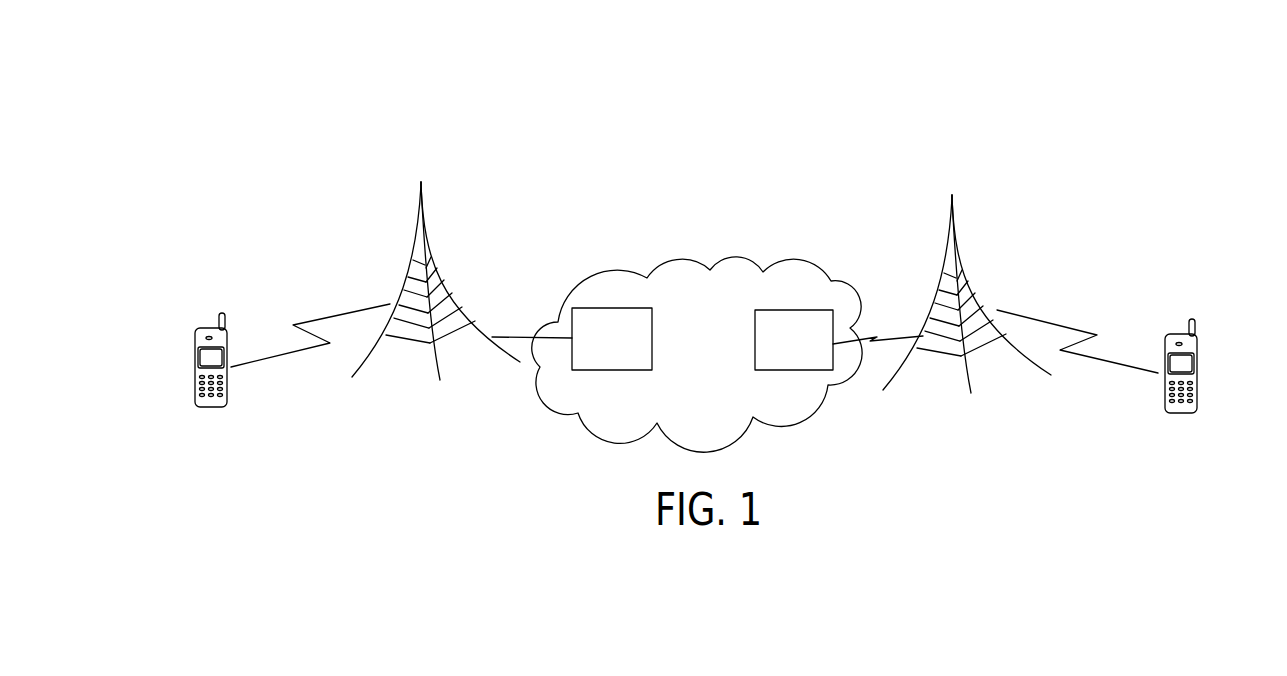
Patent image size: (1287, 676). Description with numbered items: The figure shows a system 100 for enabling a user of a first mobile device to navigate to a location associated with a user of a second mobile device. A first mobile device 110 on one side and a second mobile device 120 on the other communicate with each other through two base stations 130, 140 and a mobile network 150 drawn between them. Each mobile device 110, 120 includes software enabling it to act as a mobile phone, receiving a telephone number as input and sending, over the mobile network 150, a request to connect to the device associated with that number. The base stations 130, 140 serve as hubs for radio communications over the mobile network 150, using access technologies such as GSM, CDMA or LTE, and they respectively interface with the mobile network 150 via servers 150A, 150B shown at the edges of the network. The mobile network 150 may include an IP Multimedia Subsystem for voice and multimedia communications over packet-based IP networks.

The system 100 is at (648, 99).
The first mobile device 110 is at (195, 357).
The second mobile device 120 is at (1198, 364).
The base station 130 is at (425, 231).
The base station 140 is at (957, 243).
The mobile network 150 is at (737, 257).
The server 150A is at (565, 325).
The server 150B is at (795, 310).